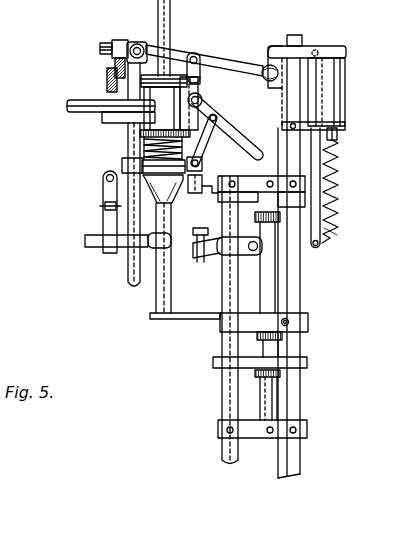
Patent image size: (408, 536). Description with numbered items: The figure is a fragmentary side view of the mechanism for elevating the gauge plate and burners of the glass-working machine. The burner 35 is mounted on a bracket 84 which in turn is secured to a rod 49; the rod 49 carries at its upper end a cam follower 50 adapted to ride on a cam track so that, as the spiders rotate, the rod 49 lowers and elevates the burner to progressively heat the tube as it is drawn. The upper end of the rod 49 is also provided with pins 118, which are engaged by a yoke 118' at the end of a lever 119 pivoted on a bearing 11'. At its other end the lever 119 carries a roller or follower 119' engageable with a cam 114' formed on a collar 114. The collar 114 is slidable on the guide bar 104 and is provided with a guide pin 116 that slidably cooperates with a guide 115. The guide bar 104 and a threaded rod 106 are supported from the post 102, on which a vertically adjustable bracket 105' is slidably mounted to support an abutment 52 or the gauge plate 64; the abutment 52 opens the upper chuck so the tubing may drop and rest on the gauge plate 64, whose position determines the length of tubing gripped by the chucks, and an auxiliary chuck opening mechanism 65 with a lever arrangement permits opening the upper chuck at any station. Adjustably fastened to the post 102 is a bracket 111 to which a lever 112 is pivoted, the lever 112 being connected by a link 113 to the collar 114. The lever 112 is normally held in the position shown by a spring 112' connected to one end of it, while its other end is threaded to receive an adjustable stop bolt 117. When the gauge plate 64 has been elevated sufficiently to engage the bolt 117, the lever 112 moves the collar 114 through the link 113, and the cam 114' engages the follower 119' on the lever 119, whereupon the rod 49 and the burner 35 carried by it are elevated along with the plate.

The bearing 11' is at (180, 48).
The burner 35 is at (155, 248).
The rod 49 is at (128, 268).
The cam follower 50 is at (100, 49).
The abutment 52 is at (205, 195).
The gauge plate 64 is at (188, 319).
The auxiliary chuck opening mechanism 65 is at (243, 133).
The bracket 84 is at (122, 164).
The post 102 is at (223, 388).
The guide bar 104 is at (300, 292).
The bracket 105' is at (286, 335).
The threaded rod 106 is at (273, 403).
The bracket 111 is at (233, 275).
The lever 112 is at (331, 198).
The spring 112' is at (354, 212).
The link 113 is at (339, 155).
The collar 114 is at (307, 37).
The cam 114' is at (259, 51).
The guide 115 is at (346, 126).
The guide pin 116 is at (346, 89).
The adjustable stop bolt 117 is at (215, 270).
The pins 118 is at (100, 49).
The yoke 118' is at (134, 33).
The lever 119 is at (204, 53).
The roller or follower 119' is at (250, 79).